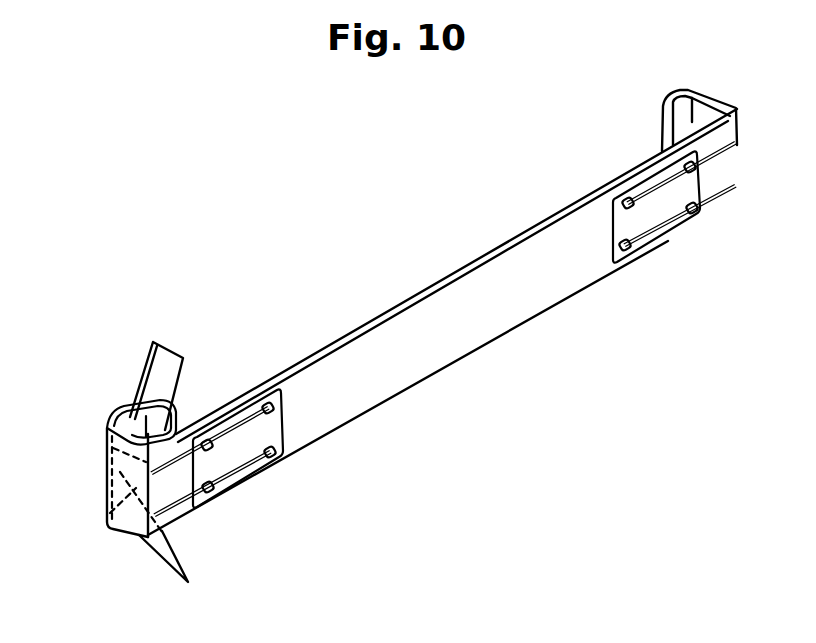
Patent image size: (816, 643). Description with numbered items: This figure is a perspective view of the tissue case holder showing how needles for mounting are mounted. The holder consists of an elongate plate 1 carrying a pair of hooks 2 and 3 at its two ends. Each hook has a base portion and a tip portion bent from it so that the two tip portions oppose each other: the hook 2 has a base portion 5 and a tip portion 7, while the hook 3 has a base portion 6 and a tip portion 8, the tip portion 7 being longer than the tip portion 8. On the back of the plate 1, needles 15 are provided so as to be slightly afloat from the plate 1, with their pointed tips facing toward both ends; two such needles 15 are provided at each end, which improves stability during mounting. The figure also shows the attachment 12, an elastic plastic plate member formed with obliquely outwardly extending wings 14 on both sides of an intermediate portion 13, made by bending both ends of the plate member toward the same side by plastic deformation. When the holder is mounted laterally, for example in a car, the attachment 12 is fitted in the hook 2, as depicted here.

The plate 1 is at (432, 303).
The hook 2 is at (103, 451).
The hook 3 is at (684, 93).
The base portion 5 is at (117, 477).
The base portion 6 is at (707, 107).
The tip portion 7 is at (120, 430).
The tip portion 8 is at (678, 133).
The attachment 12 is at (172, 341).
The intermediate portion 13 is at (107, 517).
The wings 14 is at (157, 372).
The needles 15 is at (203, 513).